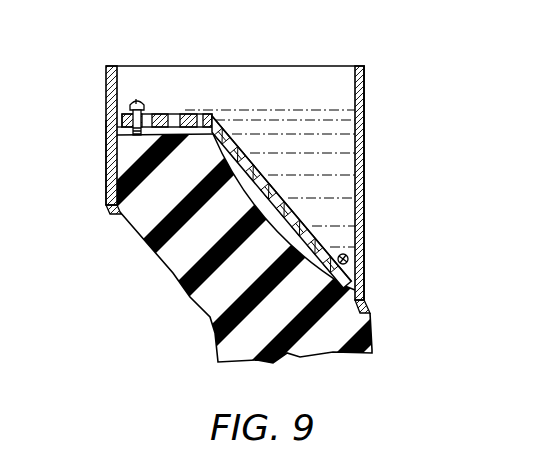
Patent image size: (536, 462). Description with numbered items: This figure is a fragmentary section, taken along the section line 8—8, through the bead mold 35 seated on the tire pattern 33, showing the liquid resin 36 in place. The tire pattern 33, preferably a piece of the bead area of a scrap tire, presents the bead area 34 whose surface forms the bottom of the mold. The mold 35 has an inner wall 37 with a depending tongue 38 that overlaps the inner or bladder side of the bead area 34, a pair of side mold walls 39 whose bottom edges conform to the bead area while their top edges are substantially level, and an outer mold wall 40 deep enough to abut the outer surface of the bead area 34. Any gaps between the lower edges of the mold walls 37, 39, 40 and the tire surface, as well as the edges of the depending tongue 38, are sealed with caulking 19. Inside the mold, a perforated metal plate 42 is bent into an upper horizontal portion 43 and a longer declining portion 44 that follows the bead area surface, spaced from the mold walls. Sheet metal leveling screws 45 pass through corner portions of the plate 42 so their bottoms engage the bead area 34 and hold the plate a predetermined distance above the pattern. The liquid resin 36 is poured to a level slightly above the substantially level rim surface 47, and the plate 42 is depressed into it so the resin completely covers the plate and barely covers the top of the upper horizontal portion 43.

The section line 8— 8 is at (77, 302).
The caulking 19 is at (118, 216).
The tire pattern 33 is at (198, 157).
The bead area 34 is at (274, 233).
The bead mold 35 is at (370, 165).
The liquid resin 36 is at (273, 123).
The inner wall 37 is at (107, 97).
The depending tongue 38 is at (110, 165).
The side mold walls 39 is at (266, 99).
The outer mold wall 40 is at (366, 242).
The perforated metal plate 42 is at (263, 157).
The upper horizontal portion 43 is at (160, 115).
The declining portion 44 is at (283, 192).
The sheet metal leveling screws 45 is at (136, 102).
The rim surface 47 is at (155, 138).